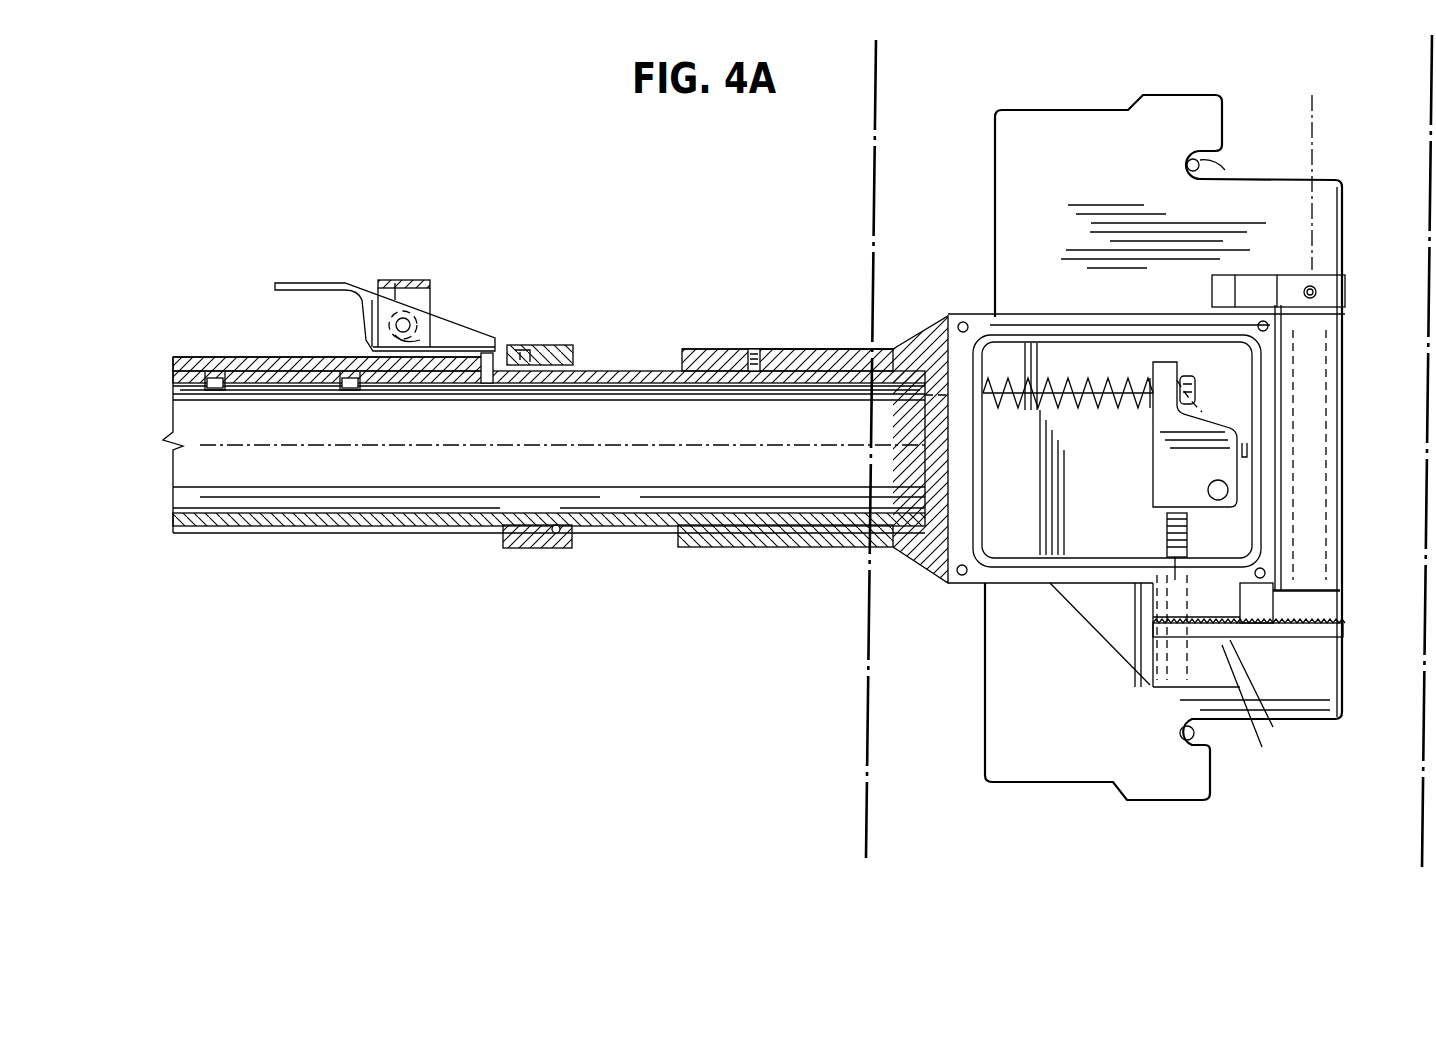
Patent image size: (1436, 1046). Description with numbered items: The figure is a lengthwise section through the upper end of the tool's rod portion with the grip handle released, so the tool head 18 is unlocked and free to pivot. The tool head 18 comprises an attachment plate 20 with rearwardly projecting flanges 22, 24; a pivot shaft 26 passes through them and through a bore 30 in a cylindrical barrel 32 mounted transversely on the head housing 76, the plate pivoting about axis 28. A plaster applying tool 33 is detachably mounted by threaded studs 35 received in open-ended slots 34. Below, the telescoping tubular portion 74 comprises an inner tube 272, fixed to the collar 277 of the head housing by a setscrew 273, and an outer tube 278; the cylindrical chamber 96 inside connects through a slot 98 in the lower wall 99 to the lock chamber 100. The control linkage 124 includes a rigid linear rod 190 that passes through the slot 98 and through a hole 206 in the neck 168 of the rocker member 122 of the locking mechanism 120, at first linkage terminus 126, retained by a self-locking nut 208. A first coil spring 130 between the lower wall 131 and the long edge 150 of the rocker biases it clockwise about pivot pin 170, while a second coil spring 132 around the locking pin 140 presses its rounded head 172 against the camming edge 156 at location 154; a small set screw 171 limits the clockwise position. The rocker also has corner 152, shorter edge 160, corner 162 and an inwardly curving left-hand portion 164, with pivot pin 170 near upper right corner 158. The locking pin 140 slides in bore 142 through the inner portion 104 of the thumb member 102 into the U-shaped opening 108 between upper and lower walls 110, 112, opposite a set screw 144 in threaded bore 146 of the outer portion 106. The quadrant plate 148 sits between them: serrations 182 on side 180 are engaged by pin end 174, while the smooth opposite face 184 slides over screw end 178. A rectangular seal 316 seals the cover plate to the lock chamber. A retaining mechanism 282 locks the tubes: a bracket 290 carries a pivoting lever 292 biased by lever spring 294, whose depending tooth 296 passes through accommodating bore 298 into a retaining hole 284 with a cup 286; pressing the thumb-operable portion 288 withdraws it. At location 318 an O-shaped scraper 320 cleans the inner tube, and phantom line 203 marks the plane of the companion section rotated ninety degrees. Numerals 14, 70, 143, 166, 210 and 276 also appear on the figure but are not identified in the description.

The firearm 14 is at (866, 665).
The tool head 18 is at (868, 690).
The attachment plate 20 is at (1000, 175).
The flange 22 is at (1285, 275).
The flange 24 is at (1300, 600).
The pivot shaft 26 is at (1330, 580).
The axis 28 is at (1315, 150).
The bore 30 is at (1340, 342).
The barrel 32 is at (1340, 320).
The plaster applying tool 33 is at (868, 715).
The open-ended slots 34 is at (1225, 152).
The threaded studs 35 is at (1213, 168).
The direction 70 is at (711, 200).
The telescoping tubular portion 74 is at (258, 357).
The head housing 76 is at (940, 385).
The cylindrical chamber 96 is at (545, 479).
The slot 98 is at (925, 400).
The lower wall 99 is at (935, 410).
The lock chamber 100 is at (945, 415).
The thumb member 102 is at (1073, 592).
The inner portion 104 is at (1140, 600).
The outer portion 106 is at (1152, 690).
The U-shaped opening 108 is at (1145, 645).
The upper wall 110 is at (1273, 727).
The lower wall 112 is at (1262, 747).
The locking mechanism 120 is at (1181, 380).
The rocker member 122 is at (1176, 372).
The control linkage 124 is at (1195, 378).
The first linkage terminus 126 is at (1197, 375).
The first coil spring 130 is at (1010, 388).
The lower wall 131 is at (955, 425).
The second coil spring 132 is at (1165, 502).
The locking pin 140 is at (1168, 527).
The bore 142 is at (1165, 552).
The hole 143 is at (1228, 490).
The set screw 144 is at (1195, 680).
The threaded bore 146 is at (1205, 680).
The quadrant plate 148 is at (1250, 690).
The long edge 150 is at (1155, 440).
The corner 152 is at (1160, 462).
The location 154 is at (1165, 487).
The camming edge 156 is at (1230, 515).
The upper right corner 158 is at (1240, 505).
The shorter edge 160 is at (1250, 452).
The corner 162 is at (1236, 422).
The left-hand portion 164 is at (1238, 412).
The surface 166 is at (1240, 400).
The neck 168 is at (1170, 365).
The pivot pin 170 is at (1250, 492).
The set screw 171 is at (1245, 440).
The rounded head 172 is at (1200, 522).
The pin end 174 is at (1150, 630).
The screw end 178 is at (1150, 680).
The side 180 is at (1290, 625).
The serrations 182 is at (1275, 640).
The opposite face 184 is at (1280, 660).
The rigid linear rod 190 is at (672, 396).
The phantom line 203 is at (430, 450).
The hole 206 is at (1186, 388).
The self-locking nut 208 is at (1193, 392).
The wall 210 is at (1030, 400).
The inner tube 272 is at (647, 371).
The setscrew 273 is at (733, 349).
The screw 276 is at (757, 349).
The collar 277 is at (800, 357).
The outer tube 278 is at (200, 357).
The retaining mechanism 282 is at (394, 272).
The retaining holes 284 is at (228, 372).
The cup 286 is at (218, 392).
The thumb-operable portion 288 is at (290, 282).
The bracket 290 is at (422, 280).
The pivoting lever 292 is at (437, 325).
The lever spring 294 is at (462, 320).
The depending tooth 296 is at (487, 350).
The accommodating bore 298 is at (520, 345).
The rectangular seal 316 is at (990, 385).
The location 318 is at (572, 566).
The O-shaped scraper 320 is at (535, 548).